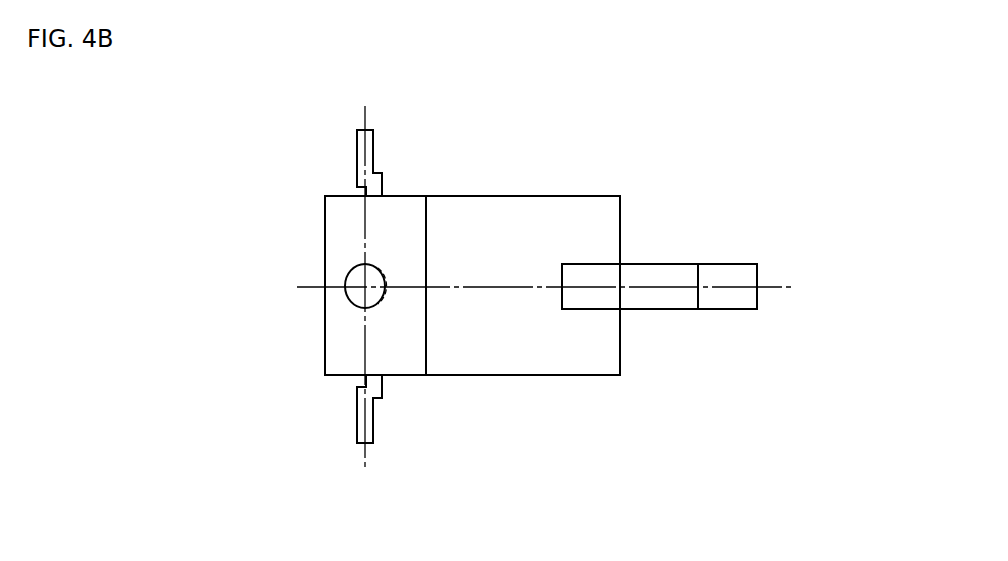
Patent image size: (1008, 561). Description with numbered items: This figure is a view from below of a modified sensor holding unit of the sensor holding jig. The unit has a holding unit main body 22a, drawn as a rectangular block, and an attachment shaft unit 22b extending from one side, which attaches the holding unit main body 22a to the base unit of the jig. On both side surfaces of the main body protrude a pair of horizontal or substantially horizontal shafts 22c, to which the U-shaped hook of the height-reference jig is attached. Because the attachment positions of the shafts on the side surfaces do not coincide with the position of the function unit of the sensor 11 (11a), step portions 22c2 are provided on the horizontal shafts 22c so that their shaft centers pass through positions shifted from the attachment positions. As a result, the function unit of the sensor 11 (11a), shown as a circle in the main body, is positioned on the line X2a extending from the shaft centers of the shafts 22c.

The holding unit main body 22a is at (325, 337).
The attachment shaft unit 22b is at (672, 263).
The horizontal or substantially horizontal shaft 22c is at (357, 150).
The step portion 22c2 is at (381, 173).
The sensor 11 is at (296, 225).
The sensor 11a is at (382, 286).
The line extending from shaft centers X2a is at (367, 453).